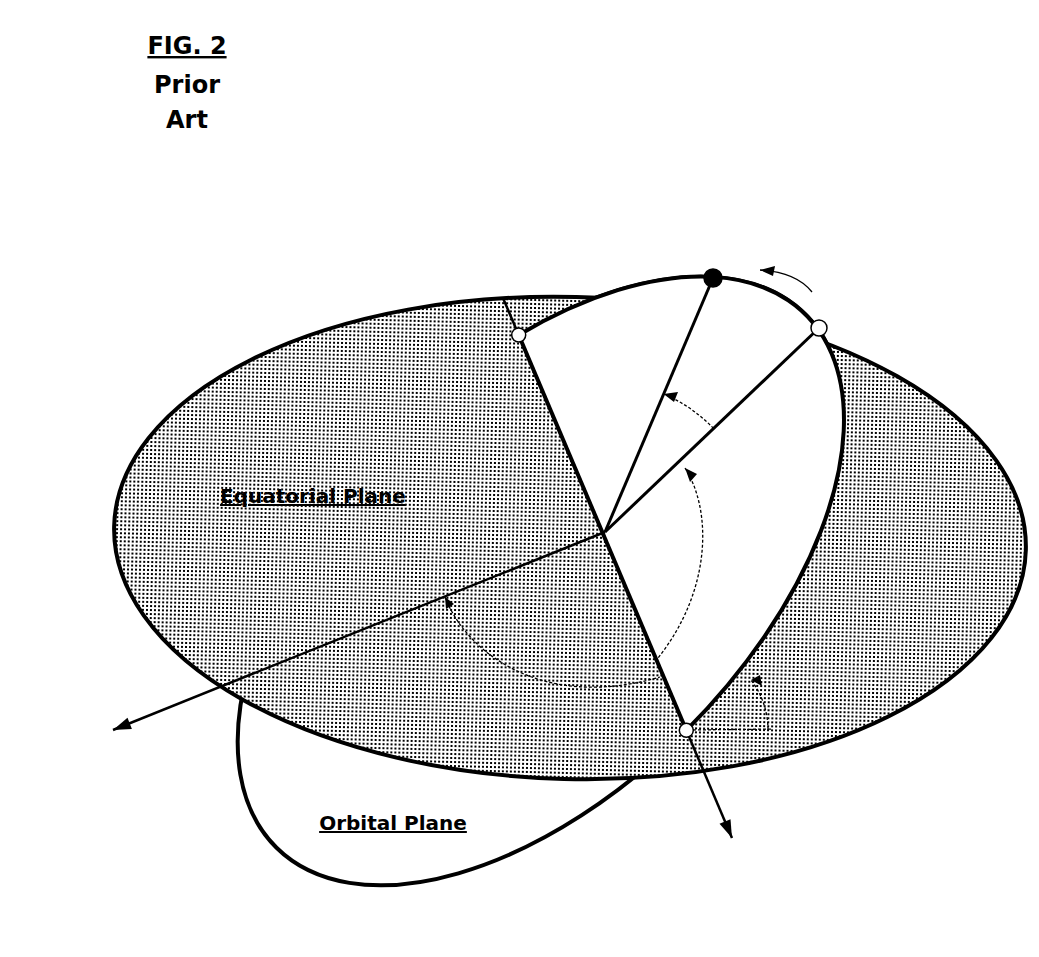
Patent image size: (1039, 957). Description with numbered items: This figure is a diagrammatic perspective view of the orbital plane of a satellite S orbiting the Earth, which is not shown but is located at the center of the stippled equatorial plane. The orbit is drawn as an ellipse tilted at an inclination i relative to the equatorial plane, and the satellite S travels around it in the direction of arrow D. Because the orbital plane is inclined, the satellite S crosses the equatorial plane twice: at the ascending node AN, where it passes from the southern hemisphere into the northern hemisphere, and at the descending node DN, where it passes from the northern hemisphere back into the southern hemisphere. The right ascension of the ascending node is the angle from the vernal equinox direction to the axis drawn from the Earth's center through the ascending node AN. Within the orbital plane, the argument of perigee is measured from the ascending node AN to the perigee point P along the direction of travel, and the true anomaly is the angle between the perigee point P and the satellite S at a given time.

The descending node DN is at (512, 330).
The satellite S is at (722, 275).
The arrow D is at (786, 273).
The perigee point P is at (827, 326).
The ascending node AN is at (682, 742).
The inclination i is at (733, 702).